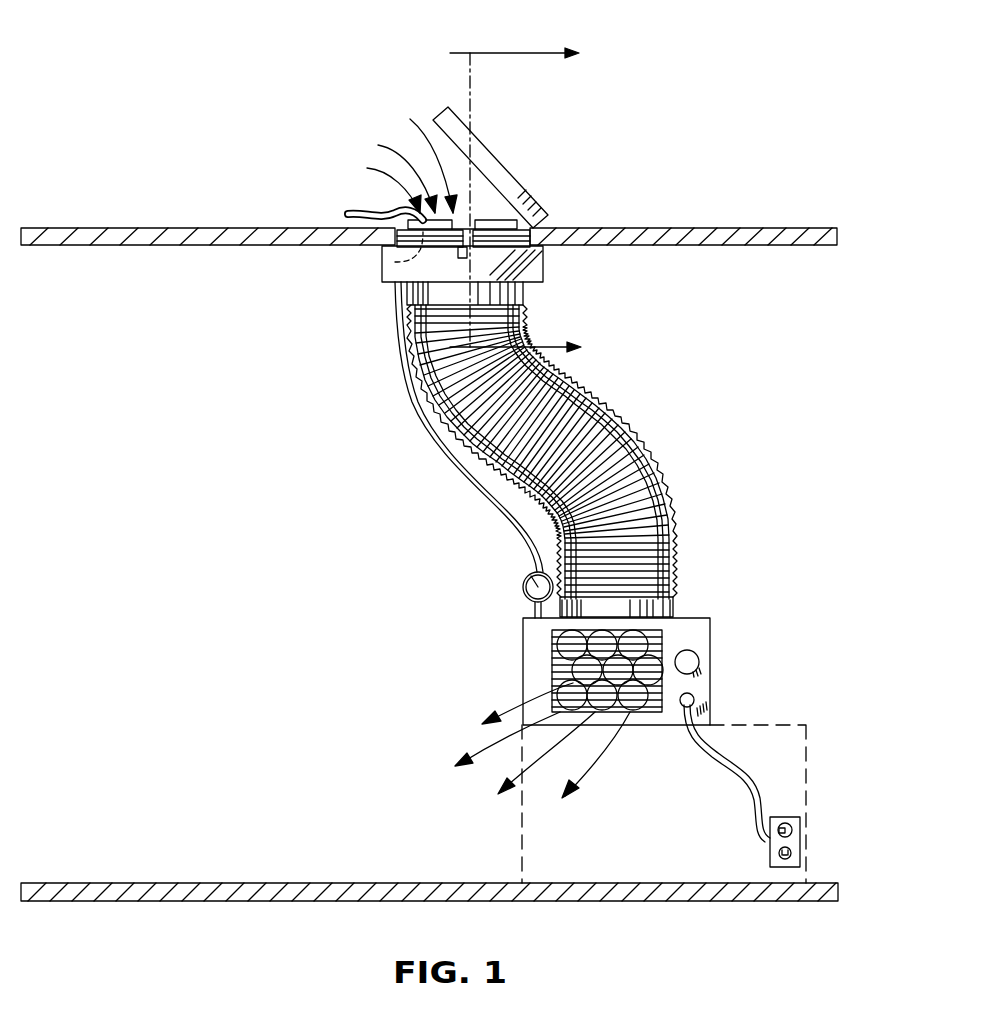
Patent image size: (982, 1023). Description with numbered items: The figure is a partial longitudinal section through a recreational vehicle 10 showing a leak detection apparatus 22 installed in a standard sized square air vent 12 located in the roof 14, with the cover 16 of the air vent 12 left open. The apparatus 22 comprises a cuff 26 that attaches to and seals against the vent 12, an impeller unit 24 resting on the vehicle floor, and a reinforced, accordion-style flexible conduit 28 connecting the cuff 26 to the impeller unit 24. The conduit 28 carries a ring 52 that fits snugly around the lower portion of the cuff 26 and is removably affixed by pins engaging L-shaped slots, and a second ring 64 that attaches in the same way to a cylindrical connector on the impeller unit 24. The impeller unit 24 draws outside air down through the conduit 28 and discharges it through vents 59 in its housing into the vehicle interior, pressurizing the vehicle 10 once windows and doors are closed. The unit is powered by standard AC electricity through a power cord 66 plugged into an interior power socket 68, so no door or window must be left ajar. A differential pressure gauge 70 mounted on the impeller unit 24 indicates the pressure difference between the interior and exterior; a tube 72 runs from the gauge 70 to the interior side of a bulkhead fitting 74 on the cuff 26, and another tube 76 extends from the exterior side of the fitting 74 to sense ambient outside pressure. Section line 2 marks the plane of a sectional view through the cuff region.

The recreational vehicle 10 is at (795, 198).
The air vent 12 is at (383, 110).
The roof 14 is at (145, 247).
The cover 16 is at (480, 152).
The section line 2 is at (528, 202).
The apparatus 22 is at (722, 446).
The impeller unit 24 is at (706, 633).
The cuff 26 is at (527, 283).
The reinforced conduit 28 is at (618, 408).
The ring 52 is at (422, 297).
The vents 59 is at (553, 668).
The ring 64 is at (674, 602).
The power cord 66 is at (750, 770).
The power socket 68 is at (795, 843).
The differential pressure gauge 70 is at (524, 589).
The tube 72 is at (415, 418).
The bulkhead fitting 74 is at (395, 262).
The tube 76 is at (358, 207).